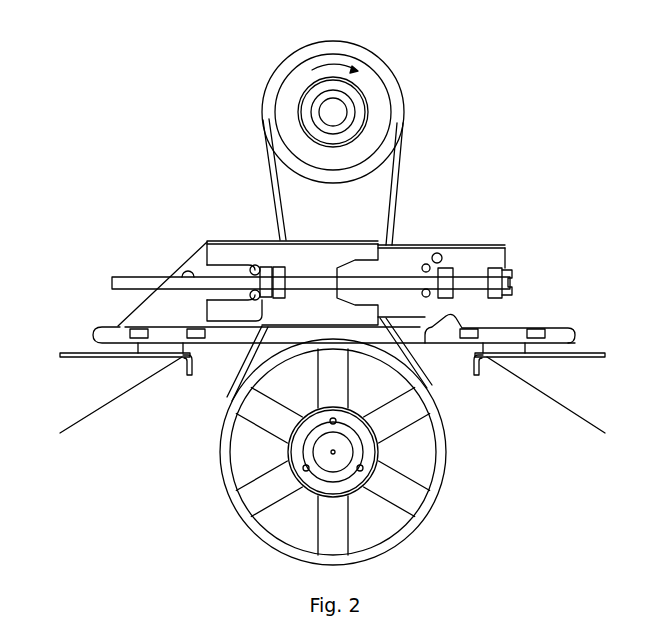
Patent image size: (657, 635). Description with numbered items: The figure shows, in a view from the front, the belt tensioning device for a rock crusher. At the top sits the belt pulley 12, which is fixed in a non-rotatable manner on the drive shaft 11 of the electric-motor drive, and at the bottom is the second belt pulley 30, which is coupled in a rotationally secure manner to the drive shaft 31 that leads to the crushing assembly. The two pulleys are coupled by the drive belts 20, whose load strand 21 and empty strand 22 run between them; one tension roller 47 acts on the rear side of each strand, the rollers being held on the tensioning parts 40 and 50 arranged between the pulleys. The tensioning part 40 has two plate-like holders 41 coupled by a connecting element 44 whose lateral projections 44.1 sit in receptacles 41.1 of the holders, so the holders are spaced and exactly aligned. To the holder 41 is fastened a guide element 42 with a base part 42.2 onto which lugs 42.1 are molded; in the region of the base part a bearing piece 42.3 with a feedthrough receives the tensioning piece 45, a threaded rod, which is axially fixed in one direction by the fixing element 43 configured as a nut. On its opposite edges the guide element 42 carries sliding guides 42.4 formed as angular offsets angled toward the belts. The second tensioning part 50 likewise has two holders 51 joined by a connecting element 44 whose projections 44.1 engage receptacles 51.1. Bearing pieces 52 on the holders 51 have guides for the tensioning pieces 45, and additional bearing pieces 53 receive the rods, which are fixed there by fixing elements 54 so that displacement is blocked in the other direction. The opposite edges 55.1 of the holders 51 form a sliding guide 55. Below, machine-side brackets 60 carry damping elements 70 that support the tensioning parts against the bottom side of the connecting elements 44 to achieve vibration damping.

The drive shaft 11 is at (327, 107).
The belt pulley 12 is at (370, 82).
The drive belt 20 is at (324, 253).
The load strand 21 is at (264, 172).
The empty strand 22 is at (405, 153).
The second belt pulley 30 is at (340, 452).
The drive shaft 31 is at (331, 453).
The tensioning part 40 is at (446, 251).
The holder 41 is at (302, 272).
The receptacle 41.1 is at (133, 331).
The guide element 42 is at (248, 250).
The lug 42.1 is at (233, 240).
The base part 42.2 is at (318, 252).
The bearing piece 42.3 is at (280, 268).
The sliding guide 42.4 is at (195, 247).
The fixing element 43 is at (250, 327).
The connecting element 44 is at (466, 377).
The projection 44.1 is at (137, 338).
The tensioning piece 45 is at (118, 277).
The tension roller 47 is at (437, 247).
The tensioning part 50 is at (516, 245).
The holder 51 is at (538, 277).
The receptacle 51.1 is at (556, 333).
The bearing piece 52 is at (452, 266).
The bearing piece 53 is at (505, 272).
The fixing element 54 is at (513, 282).
The sliding guide 55 is at (413, 222).
The edge 55.1 is at (423, 243).
The bracket 60 is at (80, 357).
The damping element 70 is at (170, 356).